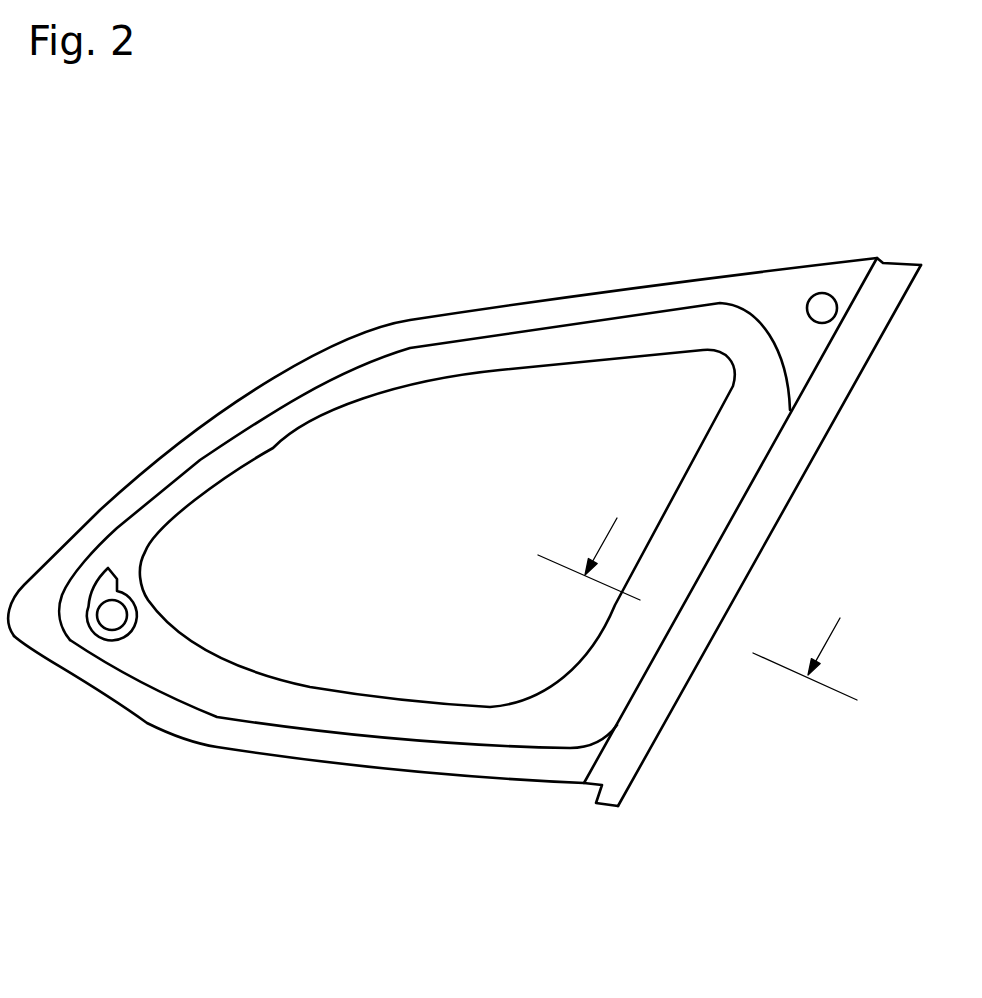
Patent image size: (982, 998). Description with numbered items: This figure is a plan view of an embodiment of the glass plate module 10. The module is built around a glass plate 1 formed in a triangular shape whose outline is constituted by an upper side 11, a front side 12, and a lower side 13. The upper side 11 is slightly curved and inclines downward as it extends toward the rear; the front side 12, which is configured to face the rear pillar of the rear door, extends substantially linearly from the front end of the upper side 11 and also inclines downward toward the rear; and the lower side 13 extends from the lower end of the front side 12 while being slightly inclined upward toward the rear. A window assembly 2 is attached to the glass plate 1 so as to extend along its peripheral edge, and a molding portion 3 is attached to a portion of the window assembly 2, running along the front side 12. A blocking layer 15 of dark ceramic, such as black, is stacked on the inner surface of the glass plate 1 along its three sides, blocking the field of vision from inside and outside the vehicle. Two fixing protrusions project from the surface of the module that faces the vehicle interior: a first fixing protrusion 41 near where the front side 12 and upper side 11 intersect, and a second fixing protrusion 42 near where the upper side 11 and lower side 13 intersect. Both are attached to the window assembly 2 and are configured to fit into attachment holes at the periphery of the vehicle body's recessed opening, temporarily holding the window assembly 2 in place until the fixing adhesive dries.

The glass plate 1 is at (302, 507).
The window assembly 2 is at (502, 318).
The molding portion 3 is at (725, 565).
The glass plate module 10 is at (392, 248).
The upper side 11 is at (380, 332).
The front side 12 is at (690, 677).
The lower side 13 is at (217, 747).
The blocking layer 15 is at (313, 712).
The first fixing protrusion 41 is at (817, 308).
The second fixing protrusion 42 is at (112, 615).